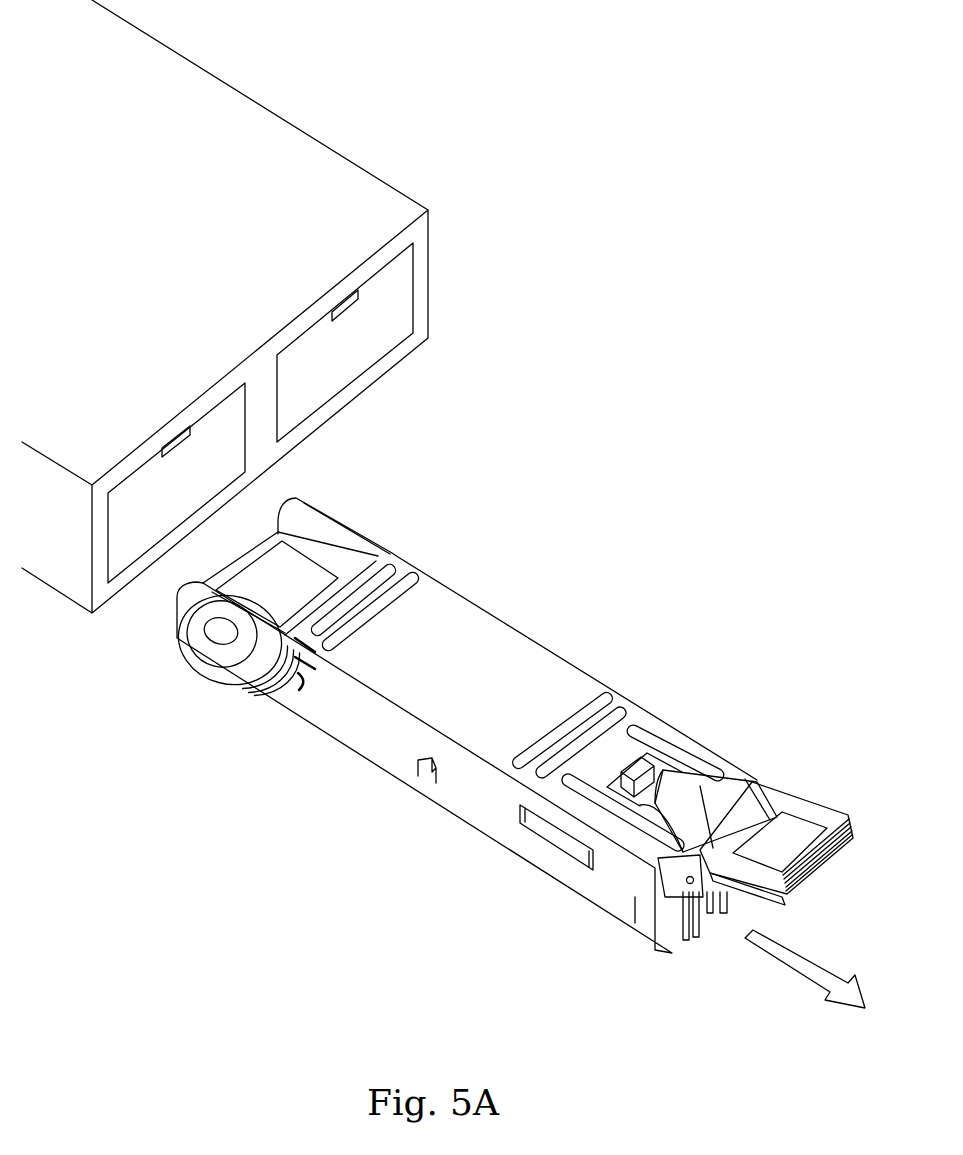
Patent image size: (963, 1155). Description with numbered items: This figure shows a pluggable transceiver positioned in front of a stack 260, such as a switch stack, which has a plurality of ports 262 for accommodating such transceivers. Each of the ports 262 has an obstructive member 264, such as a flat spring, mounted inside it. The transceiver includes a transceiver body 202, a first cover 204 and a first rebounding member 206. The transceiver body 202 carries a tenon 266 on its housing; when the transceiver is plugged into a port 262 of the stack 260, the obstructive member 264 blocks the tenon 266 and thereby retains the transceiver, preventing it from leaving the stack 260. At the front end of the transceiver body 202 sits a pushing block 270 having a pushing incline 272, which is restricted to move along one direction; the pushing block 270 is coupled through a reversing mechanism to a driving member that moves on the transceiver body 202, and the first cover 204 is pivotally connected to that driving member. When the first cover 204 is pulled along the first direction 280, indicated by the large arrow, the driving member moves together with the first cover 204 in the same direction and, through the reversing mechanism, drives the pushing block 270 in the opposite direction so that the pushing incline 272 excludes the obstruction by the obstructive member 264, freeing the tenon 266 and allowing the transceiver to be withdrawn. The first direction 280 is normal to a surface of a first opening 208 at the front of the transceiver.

The stack 260 is at (232, 72).
The port 262 is at (395, 312).
The obstructive member 264 is at (358, 293).
The transceiver body 202 is at (524, 624).
The tenon 266 is at (665, 779).
The pushing incline 272 is at (675, 780).
The pushing block 270 is at (700, 805).
The first cover 204 is at (815, 818).
The first rebounding member 206 is at (660, 857).
The first opening 208 is at (712, 905).
The first direction 280 is at (788, 960).